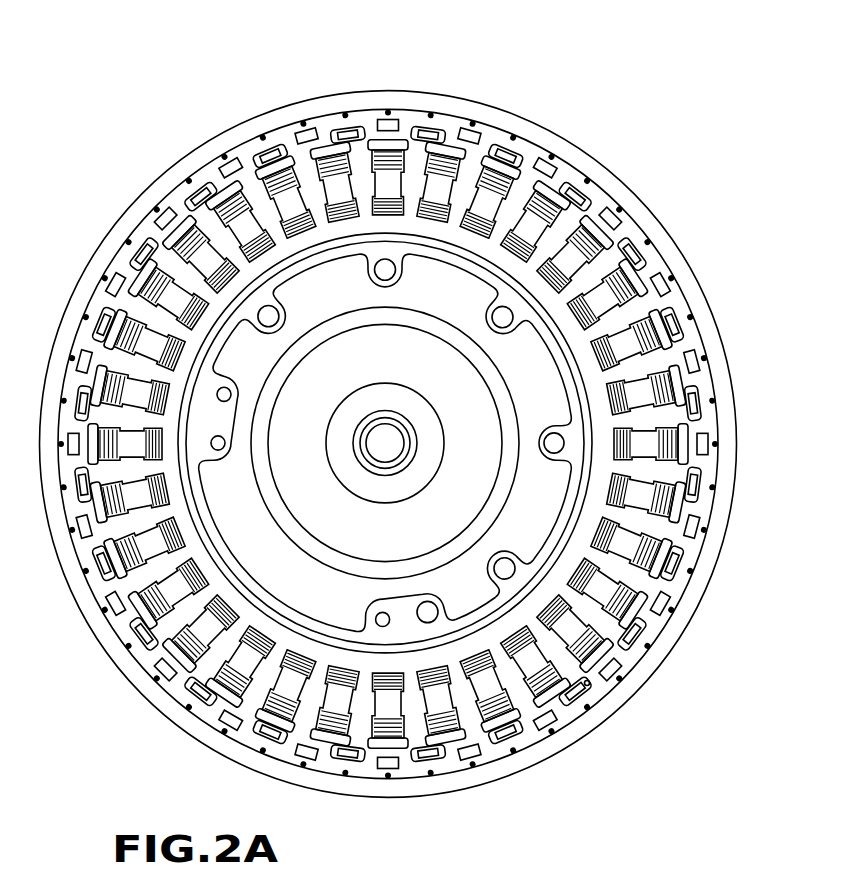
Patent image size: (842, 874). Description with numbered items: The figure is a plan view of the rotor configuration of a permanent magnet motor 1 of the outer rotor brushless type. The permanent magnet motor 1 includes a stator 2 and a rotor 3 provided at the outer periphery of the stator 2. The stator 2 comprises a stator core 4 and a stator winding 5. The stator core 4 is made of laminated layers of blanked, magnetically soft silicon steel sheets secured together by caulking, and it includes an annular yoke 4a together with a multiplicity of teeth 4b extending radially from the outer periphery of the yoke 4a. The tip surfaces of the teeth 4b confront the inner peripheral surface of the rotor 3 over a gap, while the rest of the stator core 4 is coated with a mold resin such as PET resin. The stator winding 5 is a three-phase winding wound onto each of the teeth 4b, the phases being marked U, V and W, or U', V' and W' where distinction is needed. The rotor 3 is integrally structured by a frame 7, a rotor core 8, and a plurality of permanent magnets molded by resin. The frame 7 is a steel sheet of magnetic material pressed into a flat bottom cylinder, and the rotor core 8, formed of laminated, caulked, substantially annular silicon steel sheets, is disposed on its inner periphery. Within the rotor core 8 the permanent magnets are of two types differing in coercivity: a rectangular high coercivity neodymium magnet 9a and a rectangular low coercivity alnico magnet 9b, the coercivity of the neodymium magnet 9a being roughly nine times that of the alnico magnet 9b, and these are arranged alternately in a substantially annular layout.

The permanent magnet motor 1 is at (407, 62).
The stator 2 is at (665, 472).
The rotor 3 is at (754, 398).
The stator core 4 is at (565, 573).
The yoke 4a is at (602, 608).
The teeth 4b is at (620, 650).
The stator winding 5 is at (588, 686).
The frame 7 is at (573, 153).
The rotor core 8 is at (590, 202).
The neodymium magnet 9a is at (493, 148).
The alnico magnet 9b is at (392, 120).